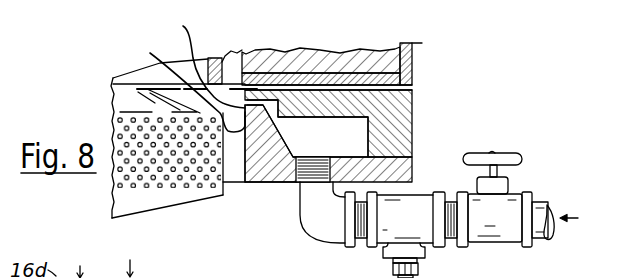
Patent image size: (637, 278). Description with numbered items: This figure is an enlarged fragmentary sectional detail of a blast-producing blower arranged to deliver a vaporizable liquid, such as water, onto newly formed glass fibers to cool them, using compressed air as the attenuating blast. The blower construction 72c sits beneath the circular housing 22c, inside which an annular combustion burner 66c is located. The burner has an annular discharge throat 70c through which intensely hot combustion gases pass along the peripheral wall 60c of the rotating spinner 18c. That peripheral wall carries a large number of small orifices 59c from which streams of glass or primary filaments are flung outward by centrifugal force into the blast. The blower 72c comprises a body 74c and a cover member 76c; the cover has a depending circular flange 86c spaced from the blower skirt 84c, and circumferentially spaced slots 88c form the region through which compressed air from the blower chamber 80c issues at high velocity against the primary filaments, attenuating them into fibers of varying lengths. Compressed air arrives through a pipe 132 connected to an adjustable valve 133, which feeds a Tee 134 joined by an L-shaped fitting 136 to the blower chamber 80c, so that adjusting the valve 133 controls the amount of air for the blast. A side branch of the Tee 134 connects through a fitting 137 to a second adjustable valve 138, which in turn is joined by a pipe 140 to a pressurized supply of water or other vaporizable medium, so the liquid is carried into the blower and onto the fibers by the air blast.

The spinner 18c is at (163, 215).
The orifices 59c is at (147, 129).
The depending circular flange 86c is at (191, 60).
The slots 88c is at (178, 86).
The annular discharge throat 70c is at (233, 63).
The annular combustion burner 66c is at (312, 33).
The circular housing 22c is at (445, 28).
The cover member 76c is at (413, 93).
The blower construction 72c is at (422, 108).
The body 74c is at (281, 182).
The blower chamber 80c is at (338, 143).
The blower skirt 84c is at (242, 178).
The peripheral wall 60c is at (226, 183).
The L-shaped fitting 136 is at (303, 213).
The Tee 134 is at (415, 195).
The adjustable valve 133 is at (483, 153).
The pipe 132 is at (561, 170).
The fitting 137 is at (388, 276).
The adjustable valve 138 is at (466, 277).
The pipe 140 is at (476, 277).